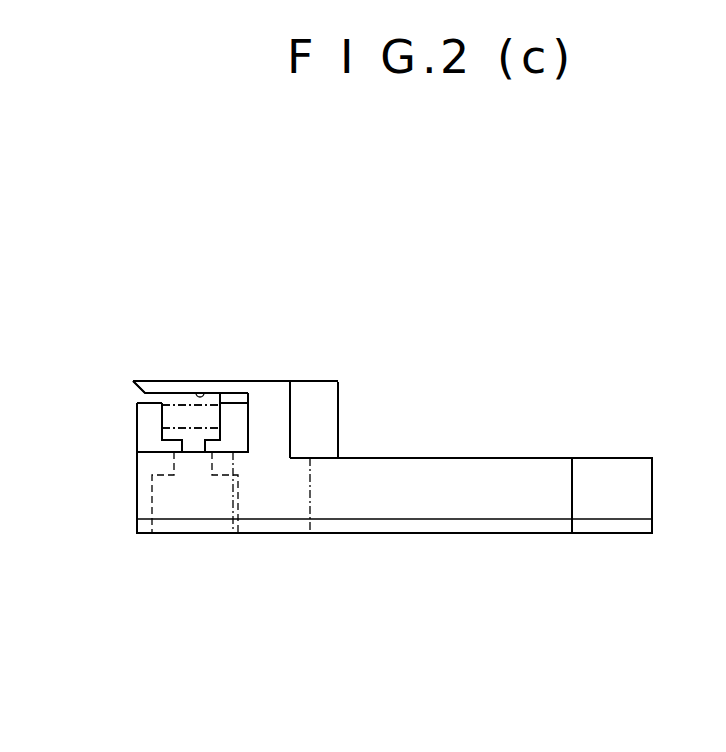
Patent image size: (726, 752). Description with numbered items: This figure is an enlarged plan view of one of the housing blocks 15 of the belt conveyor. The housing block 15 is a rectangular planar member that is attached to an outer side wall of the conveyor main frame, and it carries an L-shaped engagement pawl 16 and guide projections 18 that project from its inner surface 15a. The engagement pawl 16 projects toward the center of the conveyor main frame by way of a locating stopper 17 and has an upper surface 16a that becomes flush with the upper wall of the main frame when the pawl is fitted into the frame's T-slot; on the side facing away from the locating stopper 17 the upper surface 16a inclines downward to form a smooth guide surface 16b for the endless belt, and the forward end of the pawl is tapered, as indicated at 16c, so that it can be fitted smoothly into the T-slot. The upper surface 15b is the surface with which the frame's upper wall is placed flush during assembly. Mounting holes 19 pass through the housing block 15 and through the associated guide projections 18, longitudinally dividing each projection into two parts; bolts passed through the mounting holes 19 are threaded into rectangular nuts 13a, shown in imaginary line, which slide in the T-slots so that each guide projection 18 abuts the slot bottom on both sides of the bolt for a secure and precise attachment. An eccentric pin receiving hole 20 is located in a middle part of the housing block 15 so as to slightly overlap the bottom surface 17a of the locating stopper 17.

The rectangular nut 13a is at (172, 415).
The housing block 15 is at (490, 548).
The inner surface 15a is at (547, 457).
The upper surface 15b is at (432, 488).
The L-shaped engagement pawl 16 is at (203, 366).
The upper surface 16a is at (278, 408).
The guide surface 16b is at (322, 432).
The tapered forward end 16c is at (134, 382).
The locating stopper 17 is at (247, 427).
The bottom surface 17a is at (210, 394).
The guide projection 18 is at (150, 413).
The mounting hole 19 is at (197, 548).
The eccentric pin receiving hole 20 is at (282, 548).